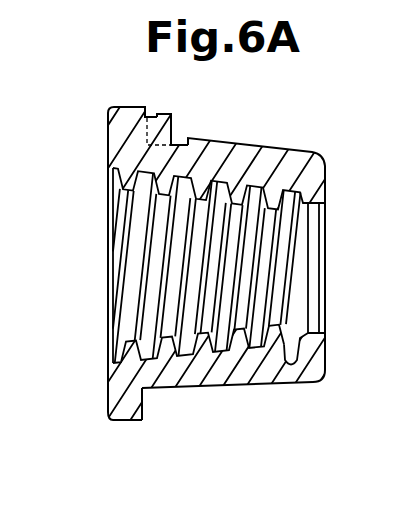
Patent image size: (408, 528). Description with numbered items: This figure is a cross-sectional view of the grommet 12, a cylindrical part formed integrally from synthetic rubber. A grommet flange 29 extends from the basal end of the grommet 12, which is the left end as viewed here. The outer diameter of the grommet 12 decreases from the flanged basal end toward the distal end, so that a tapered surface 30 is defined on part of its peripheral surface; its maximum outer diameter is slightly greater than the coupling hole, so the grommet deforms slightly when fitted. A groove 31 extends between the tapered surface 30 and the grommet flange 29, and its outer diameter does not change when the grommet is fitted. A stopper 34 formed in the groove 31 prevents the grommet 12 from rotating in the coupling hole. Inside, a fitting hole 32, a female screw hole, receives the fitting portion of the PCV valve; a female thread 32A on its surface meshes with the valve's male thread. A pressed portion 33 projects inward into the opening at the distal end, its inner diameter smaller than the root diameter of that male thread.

The grommet 12 is at (351, 132).
The grommet flange 29 is at (115, 418).
The tapered surface 30 is at (230, 389).
The groove 31 is at (167, 390).
The fitting hole 32 is at (100, 230).
The female thread 32A is at (290, 368).
The pressed portion 33 is at (325, 193).
The stopper 34 is at (169, 117).